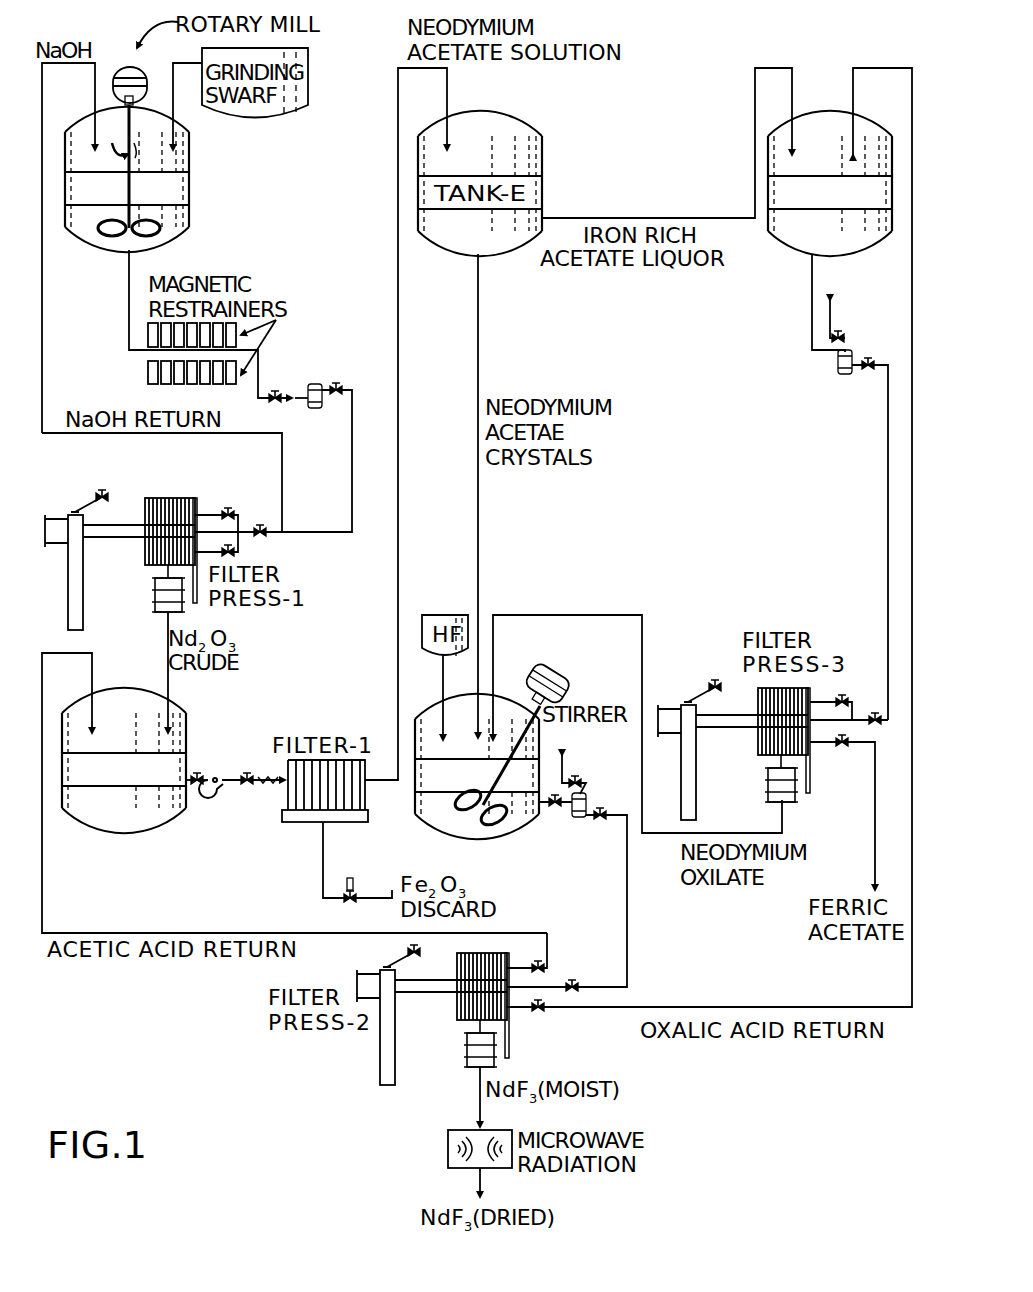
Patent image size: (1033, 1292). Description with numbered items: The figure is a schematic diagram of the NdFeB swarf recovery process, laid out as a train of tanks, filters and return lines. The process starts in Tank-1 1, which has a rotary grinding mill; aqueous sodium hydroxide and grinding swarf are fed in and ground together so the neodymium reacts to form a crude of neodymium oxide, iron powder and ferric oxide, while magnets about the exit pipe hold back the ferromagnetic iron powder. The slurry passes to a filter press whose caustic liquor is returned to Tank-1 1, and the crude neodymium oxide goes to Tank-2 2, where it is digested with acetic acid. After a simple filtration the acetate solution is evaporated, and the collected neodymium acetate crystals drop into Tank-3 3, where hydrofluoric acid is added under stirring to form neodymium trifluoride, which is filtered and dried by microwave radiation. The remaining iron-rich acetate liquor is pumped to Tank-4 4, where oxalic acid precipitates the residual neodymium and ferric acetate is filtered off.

The Tank- 1 is at (127, 159).
The Tank- 2 is at (124, 760).
The Tank- 3 is at (493, 750).
The Tank- 4 is at (830, 183).